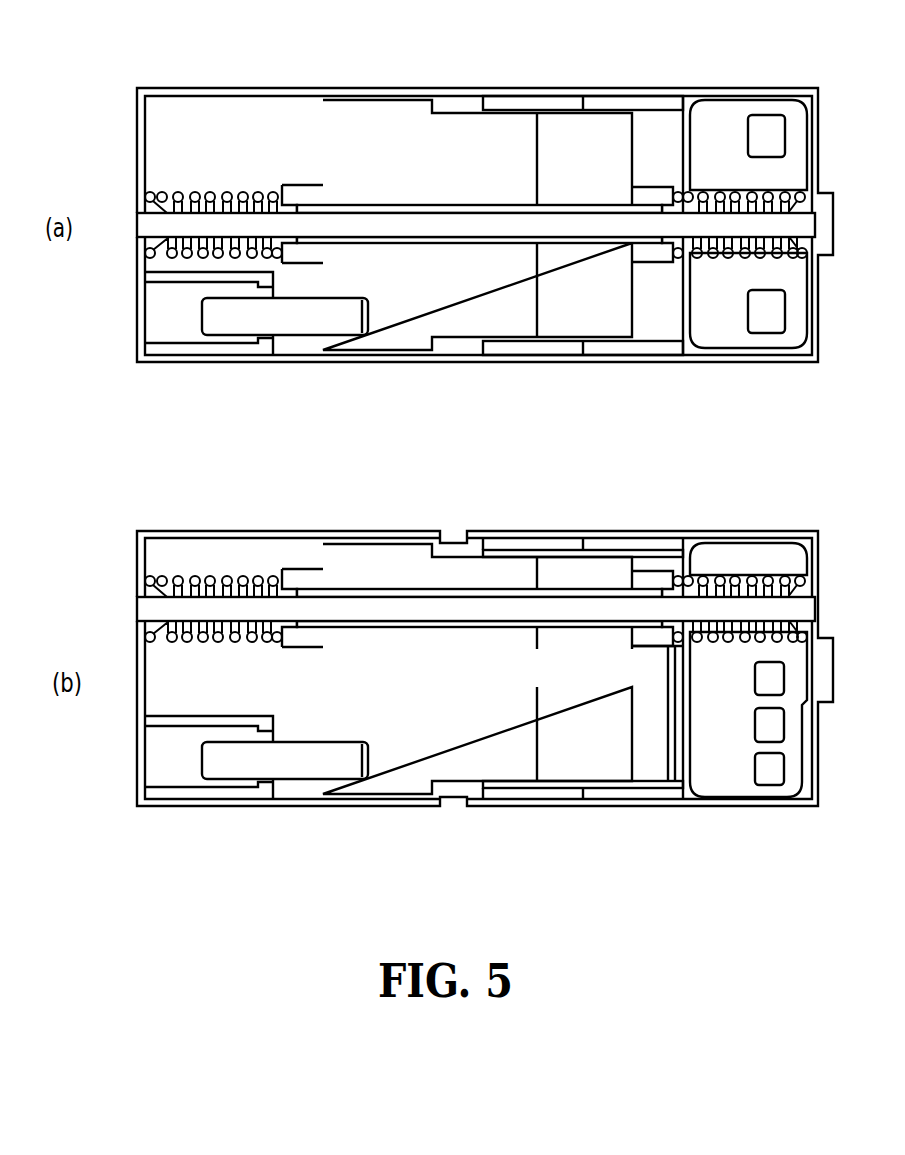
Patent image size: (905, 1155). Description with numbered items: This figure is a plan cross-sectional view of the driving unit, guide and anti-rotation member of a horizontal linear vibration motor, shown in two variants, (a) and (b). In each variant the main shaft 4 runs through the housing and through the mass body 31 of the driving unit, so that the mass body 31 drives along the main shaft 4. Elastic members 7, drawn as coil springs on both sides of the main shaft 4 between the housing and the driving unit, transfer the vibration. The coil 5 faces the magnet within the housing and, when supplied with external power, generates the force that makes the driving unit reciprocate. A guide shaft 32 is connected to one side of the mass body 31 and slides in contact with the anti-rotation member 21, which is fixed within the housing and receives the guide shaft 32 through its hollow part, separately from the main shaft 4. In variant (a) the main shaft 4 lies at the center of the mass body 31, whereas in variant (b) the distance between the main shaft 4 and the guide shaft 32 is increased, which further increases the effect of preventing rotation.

The main shaft 4 is at (150, 228).
The coil 5 is at (603, 105).
The elastic member 7 is at (227, 193).
The anti-rotation member 21 is at (177, 322).
The mass body 31 is at (393, 122).
The guide shaft 32 is at (241, 320).